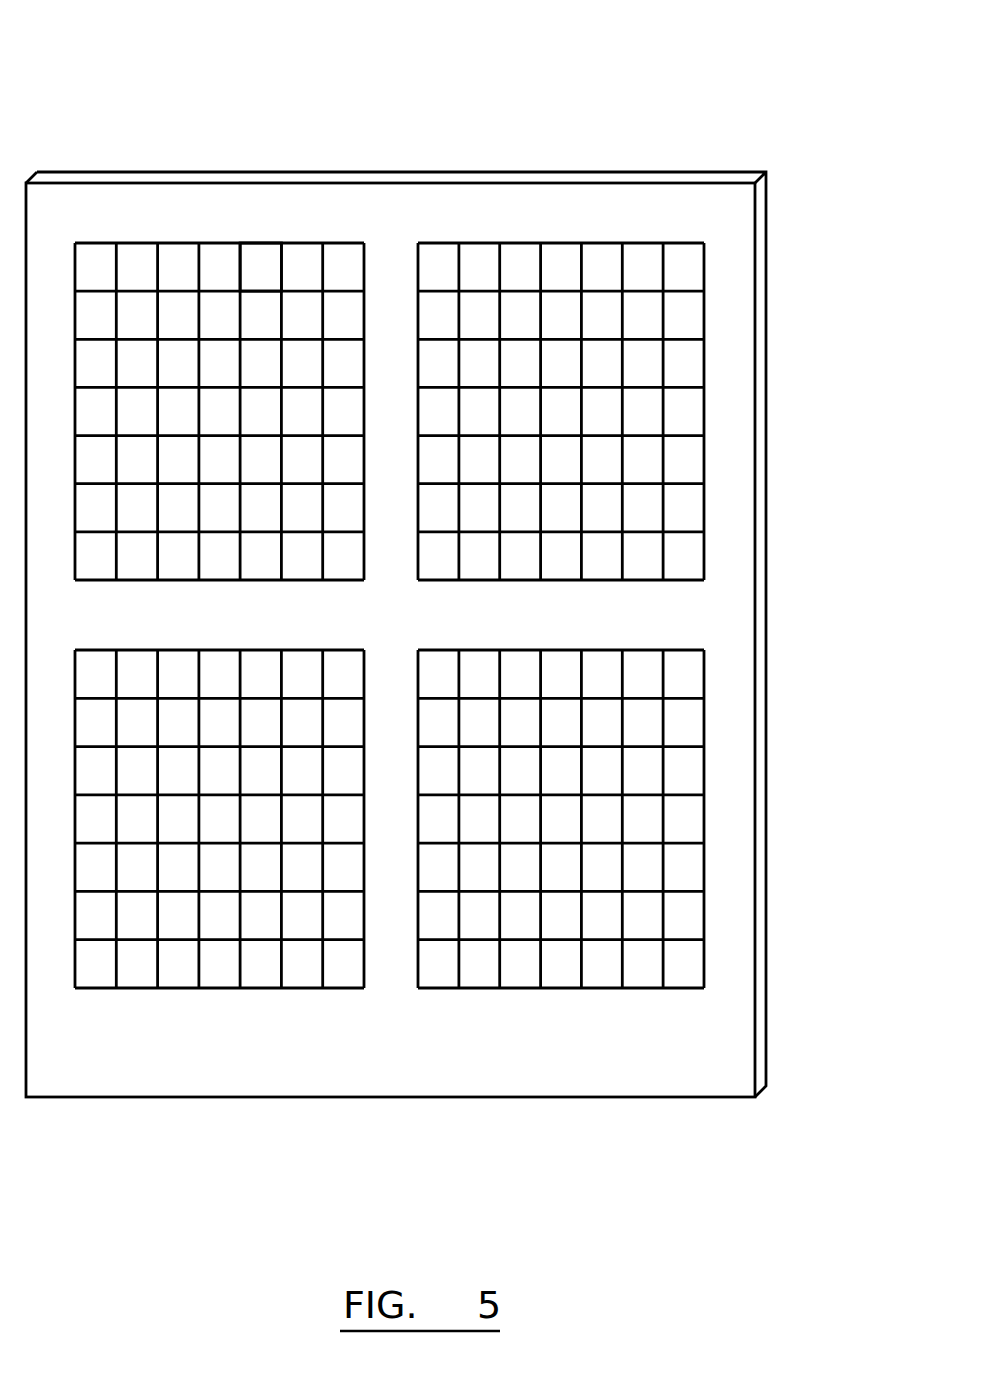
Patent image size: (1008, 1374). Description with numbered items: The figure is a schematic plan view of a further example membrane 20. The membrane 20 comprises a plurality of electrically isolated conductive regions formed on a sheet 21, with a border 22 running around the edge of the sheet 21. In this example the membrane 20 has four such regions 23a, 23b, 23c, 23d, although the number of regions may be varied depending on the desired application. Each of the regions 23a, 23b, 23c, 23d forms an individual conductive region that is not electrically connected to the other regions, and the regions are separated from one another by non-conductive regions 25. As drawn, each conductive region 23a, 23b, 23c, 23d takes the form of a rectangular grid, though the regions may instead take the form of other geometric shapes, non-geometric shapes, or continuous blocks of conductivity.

The membrane 20 is at (464, 618).
The sheet 21 is at (686, 176).
The border 22 is at (733, 284).
The region 23a is at (177, 243).
The region 23b is at (705, 410).
The region 23c is at (706, 772).
The region 23d is at (94, 988).
The non-conductive region 25 is at (258, 262).